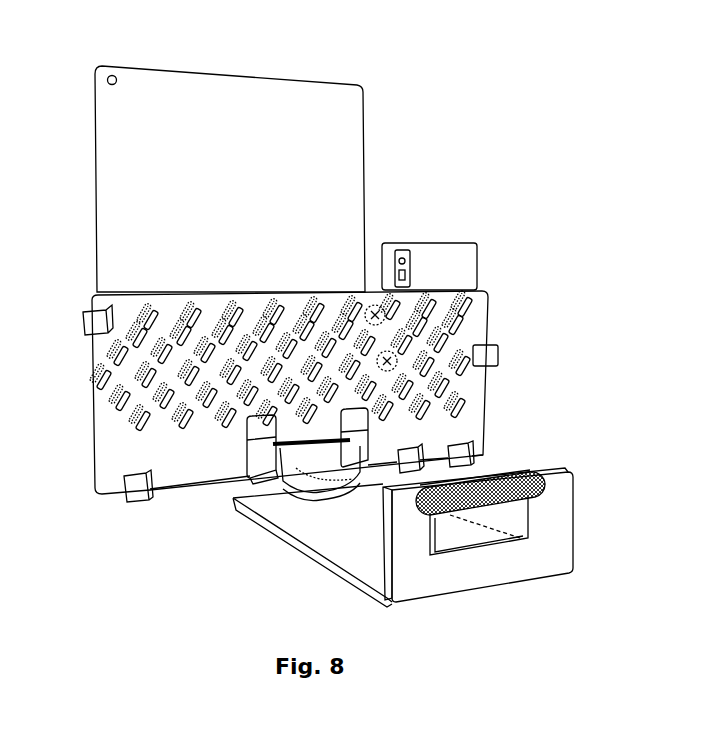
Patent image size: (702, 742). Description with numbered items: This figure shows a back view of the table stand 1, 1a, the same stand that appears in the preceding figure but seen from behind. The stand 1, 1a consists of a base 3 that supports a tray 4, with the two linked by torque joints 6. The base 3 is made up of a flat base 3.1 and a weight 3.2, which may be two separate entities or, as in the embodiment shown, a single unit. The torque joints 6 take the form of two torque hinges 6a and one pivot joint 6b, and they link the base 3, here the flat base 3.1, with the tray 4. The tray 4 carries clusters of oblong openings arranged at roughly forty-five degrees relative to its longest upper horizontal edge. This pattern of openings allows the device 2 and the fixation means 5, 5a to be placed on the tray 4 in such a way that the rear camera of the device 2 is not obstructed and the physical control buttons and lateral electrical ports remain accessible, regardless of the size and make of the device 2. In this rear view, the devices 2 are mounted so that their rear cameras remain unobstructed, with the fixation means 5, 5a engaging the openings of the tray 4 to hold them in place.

The stand 1 is at (314, 340).
The table stand 1a is at (288, 280).
The device 2 is at (340, 140).
The base 3 is at (423, 519).
The flat base 3.1 is at (293, 540).
The weight 3.2 is at (557, 488).
The tray 4 is at (107, 480).
The fixation means 5 is at (128, 482).
The fixation means 5a is at (467, 445).
The torque joints 6 is at (259, 493).
The torque hinge 6a is at (260, 470).
The pivot joint 6b is at (295, 500).